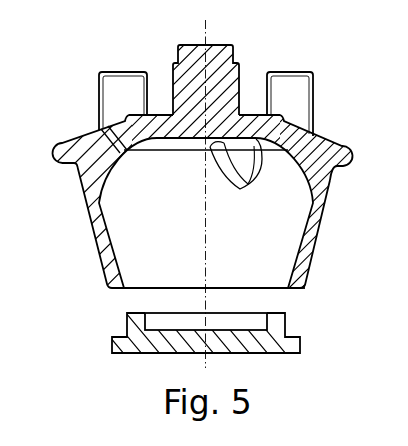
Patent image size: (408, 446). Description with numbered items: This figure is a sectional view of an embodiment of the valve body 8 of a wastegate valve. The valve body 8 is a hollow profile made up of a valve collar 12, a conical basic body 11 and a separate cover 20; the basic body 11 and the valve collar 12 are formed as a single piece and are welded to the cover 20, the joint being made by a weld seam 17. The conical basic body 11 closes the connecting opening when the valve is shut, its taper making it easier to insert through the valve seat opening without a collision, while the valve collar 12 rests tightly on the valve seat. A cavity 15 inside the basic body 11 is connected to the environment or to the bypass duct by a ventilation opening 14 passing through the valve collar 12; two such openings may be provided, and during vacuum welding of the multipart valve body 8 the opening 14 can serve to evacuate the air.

The valve body 8 is at (333, 116).
The basic body 11 is at (312, 237).
The valve collar 12 is at (343, 146).
The opening 14 is at (110, 130).
The cavity 15 is at (267, 239).
The weld seam 17 is at (315, 288).
The cover 20 is at (157, 349).